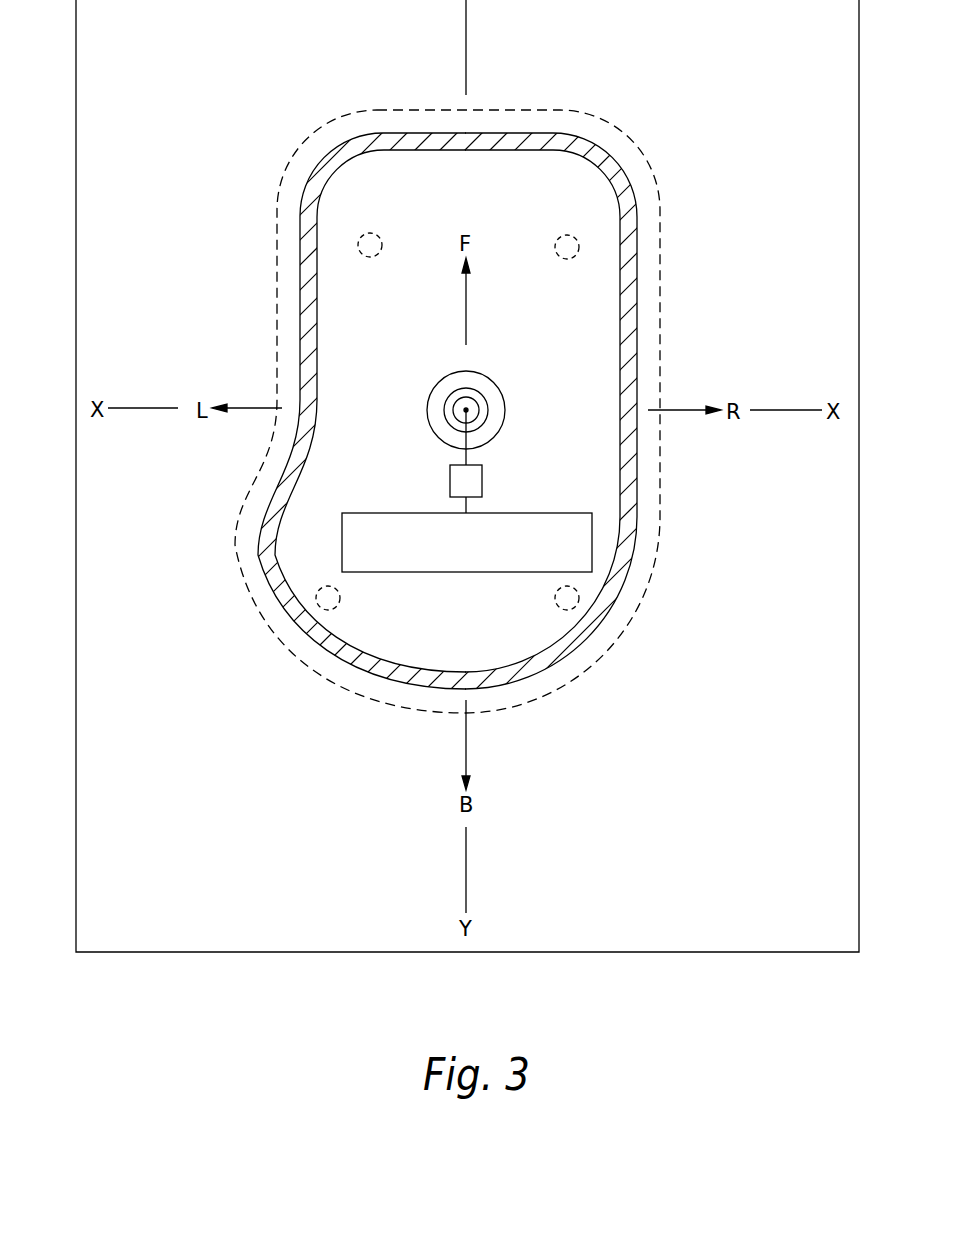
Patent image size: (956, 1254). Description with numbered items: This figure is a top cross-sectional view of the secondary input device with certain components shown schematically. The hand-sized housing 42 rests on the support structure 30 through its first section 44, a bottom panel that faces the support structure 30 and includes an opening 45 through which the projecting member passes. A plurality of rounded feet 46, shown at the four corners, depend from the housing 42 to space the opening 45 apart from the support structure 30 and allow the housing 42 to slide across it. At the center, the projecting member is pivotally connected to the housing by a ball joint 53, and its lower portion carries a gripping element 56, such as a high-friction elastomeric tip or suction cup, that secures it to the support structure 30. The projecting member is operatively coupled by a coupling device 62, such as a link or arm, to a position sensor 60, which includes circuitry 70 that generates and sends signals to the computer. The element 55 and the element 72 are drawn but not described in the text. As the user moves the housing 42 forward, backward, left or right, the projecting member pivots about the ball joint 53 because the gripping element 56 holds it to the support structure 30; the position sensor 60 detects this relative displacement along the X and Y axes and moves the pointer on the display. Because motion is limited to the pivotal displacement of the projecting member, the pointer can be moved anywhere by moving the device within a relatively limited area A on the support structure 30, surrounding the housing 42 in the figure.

The support structure 30 is at (786, 31).
The limited area A is at (638, 150).
The housing 42 is at (305, 357).
The first section 44 is at (610, 345).
The opening 45 is at (440, 384).
The feet 46 is at (358, 245).
The ball joint 53 is at (464, 409).
The inner ring 55 is at (476, 401).
The gripping element 56 is at (481, 419).
The position sensor 60 is at (482, 482).
The coupling device 62 is at (466, 457).
The circuitry 70 is at (559, 520).
The lower shaft 72 is at (466, 505).